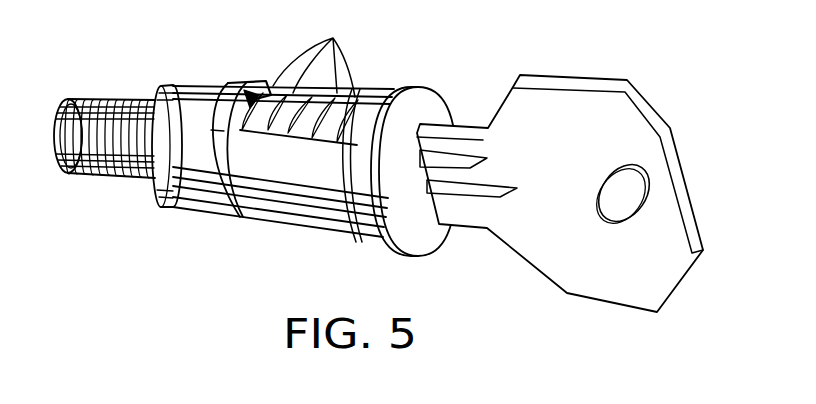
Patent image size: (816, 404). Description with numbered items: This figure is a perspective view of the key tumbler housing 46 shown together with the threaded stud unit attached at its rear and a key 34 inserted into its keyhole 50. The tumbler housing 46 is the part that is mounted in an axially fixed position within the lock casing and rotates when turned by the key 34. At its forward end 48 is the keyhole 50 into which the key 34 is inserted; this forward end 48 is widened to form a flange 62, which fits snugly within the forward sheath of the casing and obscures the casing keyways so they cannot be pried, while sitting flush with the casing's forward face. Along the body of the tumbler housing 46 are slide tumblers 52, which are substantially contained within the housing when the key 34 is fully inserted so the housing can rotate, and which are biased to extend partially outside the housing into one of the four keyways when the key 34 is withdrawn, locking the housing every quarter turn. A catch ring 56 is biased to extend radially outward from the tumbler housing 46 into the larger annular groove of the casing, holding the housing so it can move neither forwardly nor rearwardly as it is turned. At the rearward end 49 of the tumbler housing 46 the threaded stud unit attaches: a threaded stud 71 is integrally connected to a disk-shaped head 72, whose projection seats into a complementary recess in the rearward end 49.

The threaded stud 71 is at (102, 97).
The head 72 is at (165, 82).
The rearward end 49 is at (182, 84).
The tumbler housing 46 is at (273, 222).
The catch ring 56 is at (238, 80).
The slide tumblers 52 is at (340, 31).
The flange 62 is at (439, 131).
The forward end 48 is at (416, 82).
The keyhole 50 is at (440, 97).
The key 34 is at (570, 75).